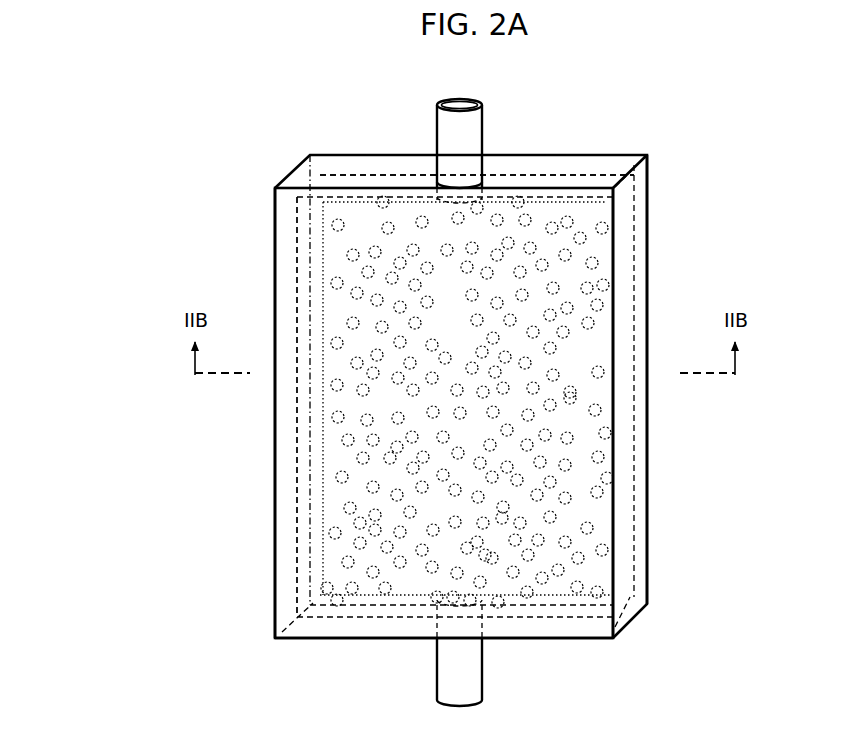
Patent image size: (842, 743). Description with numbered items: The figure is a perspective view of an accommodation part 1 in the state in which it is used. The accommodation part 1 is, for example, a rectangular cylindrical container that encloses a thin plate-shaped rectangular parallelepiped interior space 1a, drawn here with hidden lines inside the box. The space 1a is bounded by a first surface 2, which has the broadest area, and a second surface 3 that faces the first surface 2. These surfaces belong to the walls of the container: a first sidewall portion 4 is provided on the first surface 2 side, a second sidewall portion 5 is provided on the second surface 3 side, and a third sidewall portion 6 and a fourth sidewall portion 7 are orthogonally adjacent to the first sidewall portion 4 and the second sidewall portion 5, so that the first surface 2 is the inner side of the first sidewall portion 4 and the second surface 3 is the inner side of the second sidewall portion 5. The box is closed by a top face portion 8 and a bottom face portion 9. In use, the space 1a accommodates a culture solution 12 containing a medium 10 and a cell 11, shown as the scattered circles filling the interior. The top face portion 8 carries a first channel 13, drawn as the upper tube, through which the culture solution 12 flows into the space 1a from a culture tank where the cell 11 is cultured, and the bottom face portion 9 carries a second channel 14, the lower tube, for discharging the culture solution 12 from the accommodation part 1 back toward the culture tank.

The accommodation part 1 is at (357, 136).
The interior space 1a is at (380, 178).
The first surface 2 is at (327, 255).
The second surface 3 is at (655, 238).
The first sidewall portion 4 is at (292, 508).
The second sidewall portion 5 is at (653, 200).
The third sidewall portion 6 is at (622, 267).
The fourth sidewall portion 7 is at (280, 452).
The top face portion 8 is at (565, 165).
The bottom face portion 9 is at (385, 627).
The medium 10 is at (624, 425).
The cell 11 is at (657, 465).
The culture solution 12 is at (538, 402).
The first channel 13 is at (470, 140).
The second channel 14 is at (470, 675).